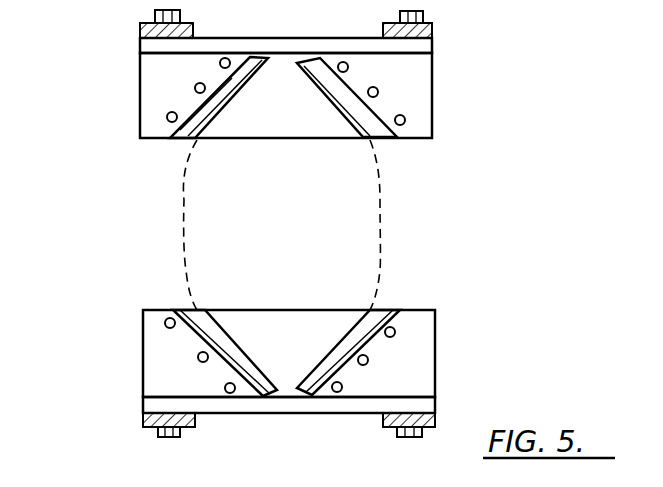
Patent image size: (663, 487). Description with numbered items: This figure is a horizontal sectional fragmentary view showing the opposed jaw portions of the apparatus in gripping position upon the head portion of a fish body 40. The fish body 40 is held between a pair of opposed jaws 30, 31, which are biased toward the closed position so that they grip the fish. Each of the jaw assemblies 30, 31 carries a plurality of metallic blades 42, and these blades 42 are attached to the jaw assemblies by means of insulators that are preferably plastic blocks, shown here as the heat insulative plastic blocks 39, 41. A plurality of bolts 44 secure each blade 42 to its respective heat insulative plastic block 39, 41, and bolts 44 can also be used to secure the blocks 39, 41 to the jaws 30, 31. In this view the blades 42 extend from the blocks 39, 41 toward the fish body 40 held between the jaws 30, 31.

The jaw 30 is at (140, 45).
The jaw 31 is at (143, 425).
The heat insulative plastic block 39 is at (157, 99).
The fish body 40 is at (185, 192).
The heat insulative plastic block 41 is at (170, 358).
The metallic blade 42 is at (248, 108).
The bolt 44 is at (349, 64).